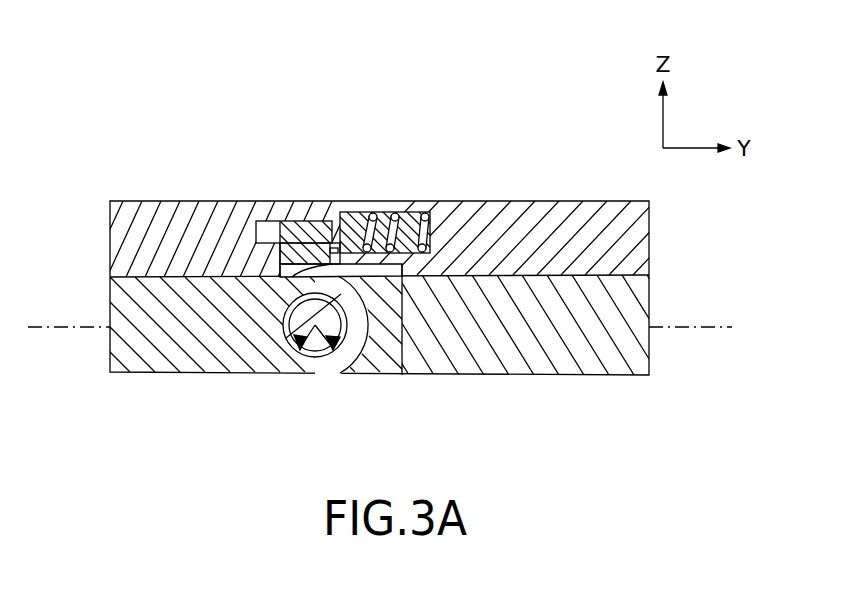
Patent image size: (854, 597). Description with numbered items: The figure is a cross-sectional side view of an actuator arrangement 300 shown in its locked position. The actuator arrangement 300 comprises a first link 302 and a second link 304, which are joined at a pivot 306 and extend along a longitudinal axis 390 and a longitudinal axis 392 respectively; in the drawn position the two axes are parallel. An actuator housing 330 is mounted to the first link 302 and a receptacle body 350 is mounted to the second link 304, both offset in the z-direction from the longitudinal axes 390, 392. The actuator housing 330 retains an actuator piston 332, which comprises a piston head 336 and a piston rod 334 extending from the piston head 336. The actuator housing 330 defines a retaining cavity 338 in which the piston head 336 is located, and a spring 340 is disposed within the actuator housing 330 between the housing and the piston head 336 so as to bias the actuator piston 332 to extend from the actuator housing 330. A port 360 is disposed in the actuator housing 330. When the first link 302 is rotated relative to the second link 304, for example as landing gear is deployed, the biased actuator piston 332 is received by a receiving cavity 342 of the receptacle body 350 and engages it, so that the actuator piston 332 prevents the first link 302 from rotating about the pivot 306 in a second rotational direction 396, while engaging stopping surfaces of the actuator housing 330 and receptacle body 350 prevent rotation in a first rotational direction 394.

The actuator arrangement 300 is at (490, 108).
The first link 302 is at (573, 368).
The second link 304 is at (160, 368).
The pivot 306 is at (315, 330).
The actuator housing 330 is at (508, 203).
The actuator piston 332 is at (328, 220).
The piston rod 334 is at (300, 213).
The piston head 336 is at (355, 213).
The retaining cavity 338 is at (405, 213).
The spring 340 is at (404, 213).
The receiving cavity 342 is at (272, 220).
The receptacle body 350 is at (186, 212).
The port 360 is at (332, 264).
The longitudinal axis 390 is at (681, 330).
The longitudinal axis 392 is at (70, 328).
The first rotational direction 394 is at (297, 335).
The second rotational direction 396 is at (338, 340).